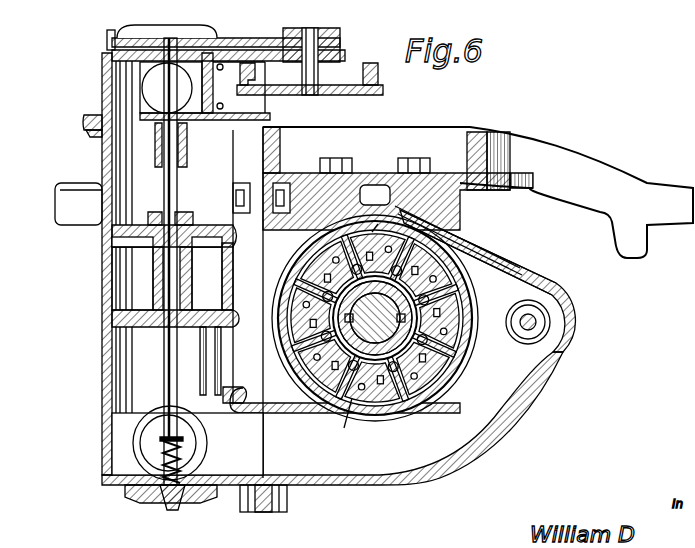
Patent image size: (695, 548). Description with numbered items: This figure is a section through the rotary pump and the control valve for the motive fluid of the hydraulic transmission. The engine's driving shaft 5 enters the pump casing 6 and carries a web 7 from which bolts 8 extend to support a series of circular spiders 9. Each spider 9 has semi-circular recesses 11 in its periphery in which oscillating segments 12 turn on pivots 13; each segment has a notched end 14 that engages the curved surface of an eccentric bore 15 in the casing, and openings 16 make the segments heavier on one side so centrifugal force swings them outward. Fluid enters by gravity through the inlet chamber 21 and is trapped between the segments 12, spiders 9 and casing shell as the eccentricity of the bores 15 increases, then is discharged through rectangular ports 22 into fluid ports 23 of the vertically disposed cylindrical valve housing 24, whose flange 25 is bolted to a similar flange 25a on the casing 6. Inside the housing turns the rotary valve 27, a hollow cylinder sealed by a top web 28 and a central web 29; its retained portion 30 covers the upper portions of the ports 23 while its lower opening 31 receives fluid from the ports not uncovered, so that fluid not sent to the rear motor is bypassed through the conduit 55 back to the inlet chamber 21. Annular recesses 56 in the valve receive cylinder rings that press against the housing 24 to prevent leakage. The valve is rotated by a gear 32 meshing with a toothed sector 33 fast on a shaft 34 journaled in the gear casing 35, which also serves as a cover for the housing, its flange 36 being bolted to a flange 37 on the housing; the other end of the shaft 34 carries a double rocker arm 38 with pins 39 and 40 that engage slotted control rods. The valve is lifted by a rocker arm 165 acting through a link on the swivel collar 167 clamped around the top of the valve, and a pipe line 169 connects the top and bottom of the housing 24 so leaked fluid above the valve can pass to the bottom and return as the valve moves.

The driving shaft 5 is at (490, 262).
The pump casing 6 is at (528, 383).
The web 7 is at (345, 337).
The bolts 8 is at (344, 421).
The circular plates or spiders 9 is at (408, 302).
The semi-circular recesses 11 is at (440, 225).
The oscillating segments 12 is at (462, 305).
The pivots 13 is at (456, 321).
The notched end 14 is at (355, 228).
The eccentric bore 15 is at (385, 230).
The openings 16 is at (410, 397).
The inlet chamber 21 is at (530, 337).
The ports 22 is at (345, 302).
The fluid ports 23 is at (238, 352).
The valve housing 24 is at (104, 292).
The flange 25 is at (262, 512).
The flange 25a is at (272, 512).
The rotary valve 27 is at (153, 280).
The web 28 is at (144, 225).
The web 29 is at (145, 328).
The retained portion 30 is at (206, 276).
The opening 31 is at (218, 372).
The gear 32 is at (152, 38).
The toothed sector 33 is at (260, 38).
The shaft 34 is at (310, 28).
The gear casing 35 is at (113, 74).
The flange 36 is at (86, 116).
The flange 37 is at (88, 130).
The double rocker arm 38 is at (350, 95).
The pin 39 is at (256, 70).
The pin 40 is at (371, 63).
The conduit 55 is at (289, 444).
The annular recesses 56 is at (114, 244).
The rocker arm 165 is at (187, 150).
The swivel collar 167 is at (193, 216).
The pipe line 169 is at (191, 281).